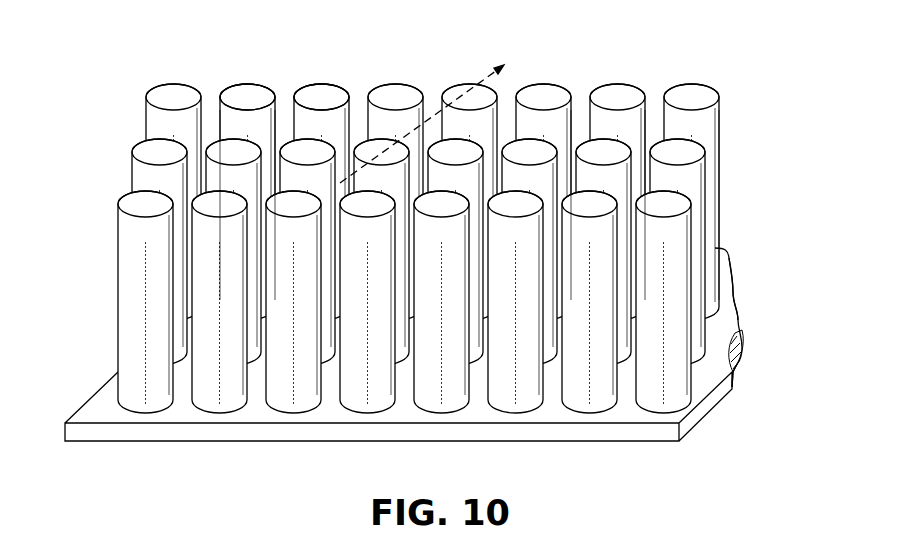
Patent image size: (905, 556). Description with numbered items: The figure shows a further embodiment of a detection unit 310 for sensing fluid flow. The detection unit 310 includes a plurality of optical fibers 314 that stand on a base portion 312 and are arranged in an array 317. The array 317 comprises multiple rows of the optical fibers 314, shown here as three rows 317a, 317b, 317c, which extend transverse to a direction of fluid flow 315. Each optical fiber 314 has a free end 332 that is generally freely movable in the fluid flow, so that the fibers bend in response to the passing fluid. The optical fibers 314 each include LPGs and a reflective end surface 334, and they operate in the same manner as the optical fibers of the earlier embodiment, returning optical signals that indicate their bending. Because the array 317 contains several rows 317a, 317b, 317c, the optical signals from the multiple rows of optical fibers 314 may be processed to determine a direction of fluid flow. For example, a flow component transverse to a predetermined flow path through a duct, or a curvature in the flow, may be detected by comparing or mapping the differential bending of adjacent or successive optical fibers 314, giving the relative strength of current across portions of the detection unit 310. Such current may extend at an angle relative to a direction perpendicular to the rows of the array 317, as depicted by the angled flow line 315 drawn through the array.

The detection unit 310 is at (112, 99).
The base portion 312 is at (540, 434).
The optical fibers 314 is at (127, 237).
The direction of fluid flow 315 is at (470, 70).
The array 317 is at (641, 77).
The row 317a is at (696, 395).
The row 317b is at (709, 349).
The row 317c is at (720, 307).
The free ends 332 is at (227, 117).
The reflective end surface 334 is at (322, 93).